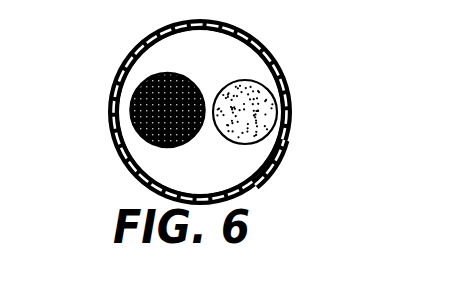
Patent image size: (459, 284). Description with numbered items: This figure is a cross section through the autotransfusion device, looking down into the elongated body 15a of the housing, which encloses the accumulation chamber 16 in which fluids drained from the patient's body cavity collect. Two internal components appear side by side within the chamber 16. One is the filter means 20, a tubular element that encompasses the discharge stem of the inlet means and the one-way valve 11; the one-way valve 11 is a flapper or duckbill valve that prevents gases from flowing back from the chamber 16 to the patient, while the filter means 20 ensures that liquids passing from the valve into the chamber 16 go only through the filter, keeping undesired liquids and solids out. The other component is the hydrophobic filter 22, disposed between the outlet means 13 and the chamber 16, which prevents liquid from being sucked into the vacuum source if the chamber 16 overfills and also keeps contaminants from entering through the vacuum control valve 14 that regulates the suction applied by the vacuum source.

The one-way valve 11 is at (203, 100).
The outlet means 13 is at (225, 122).
The regulator valve 14 is at (255, 112).
The elongated body 15a is at (253, 32).
The accumulation chamber 16 is at (210, 66).
The filter means 20 is at (148, 86).
The hydrophobic filter 22 is at (263, 84).